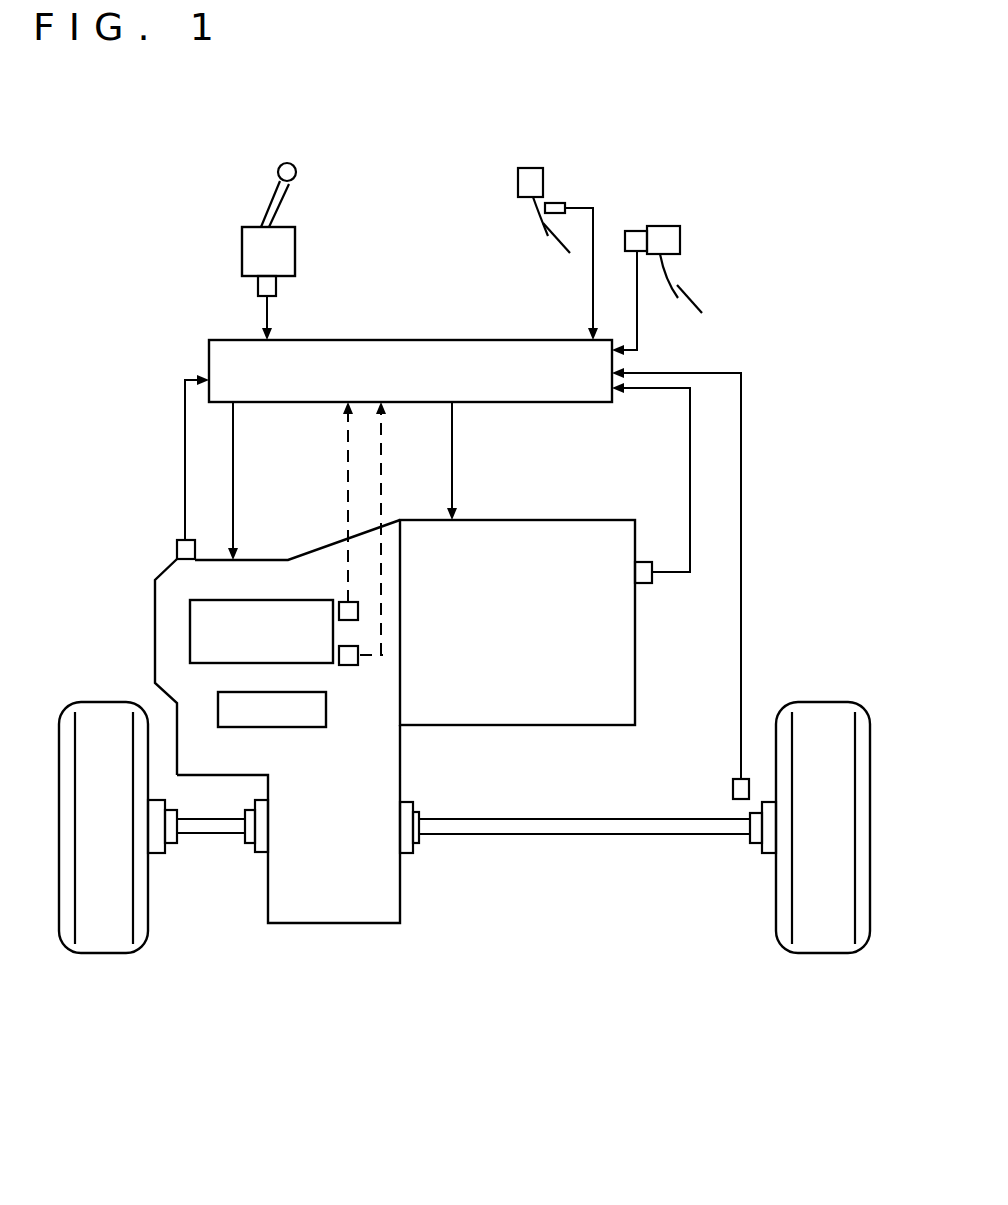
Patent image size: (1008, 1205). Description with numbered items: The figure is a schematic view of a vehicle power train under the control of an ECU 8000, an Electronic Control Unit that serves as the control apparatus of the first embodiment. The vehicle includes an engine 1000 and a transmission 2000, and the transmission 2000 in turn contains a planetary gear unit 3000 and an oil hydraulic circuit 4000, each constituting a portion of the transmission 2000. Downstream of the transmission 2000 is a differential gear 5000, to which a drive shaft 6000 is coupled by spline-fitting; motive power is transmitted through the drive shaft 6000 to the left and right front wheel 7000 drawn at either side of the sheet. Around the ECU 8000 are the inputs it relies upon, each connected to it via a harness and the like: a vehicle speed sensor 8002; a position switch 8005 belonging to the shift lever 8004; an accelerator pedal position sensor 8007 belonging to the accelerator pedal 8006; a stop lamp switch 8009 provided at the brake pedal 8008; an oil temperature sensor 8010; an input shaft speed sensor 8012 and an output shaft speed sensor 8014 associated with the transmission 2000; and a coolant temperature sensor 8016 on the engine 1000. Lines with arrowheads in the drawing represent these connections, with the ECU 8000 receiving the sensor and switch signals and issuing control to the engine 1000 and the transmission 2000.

The engine 1000 is at (535, 520).
The transmission 2000 is at (262, 560).
The planetary gear unit 3000 is at (300, 600).
The oil hydraulic circuit 4000 is at (303, 727).
The differential gear 5000 is at (332, 923).
The drive shaft 6000 is at (210, 833).
The front wheel 7000 is at (100, 702).
The ECU 8000 is at (497, 340).
The vehicle speed sensor 8002 is at (733, 786).
The shift lever 8004 is at (288, 197).
The position switch 8005 is at (258, 287).
The accelerator pedal 8006 is at (666, 265).
The accelerator pedal position sensor 8007 is at (646, 226).
The brake pedal 8008 is at (536, 224).
The stop lamp switch 8009 is at (556, 203).
The oil temperature sensor 8010 is at (177, 546).
The input shaft speed sensor 8012 is at (358, 608).
The output shaft speed sensor 8014 is at (354, 665).
The coolant temperature sensor 8016 is at (642, 583).